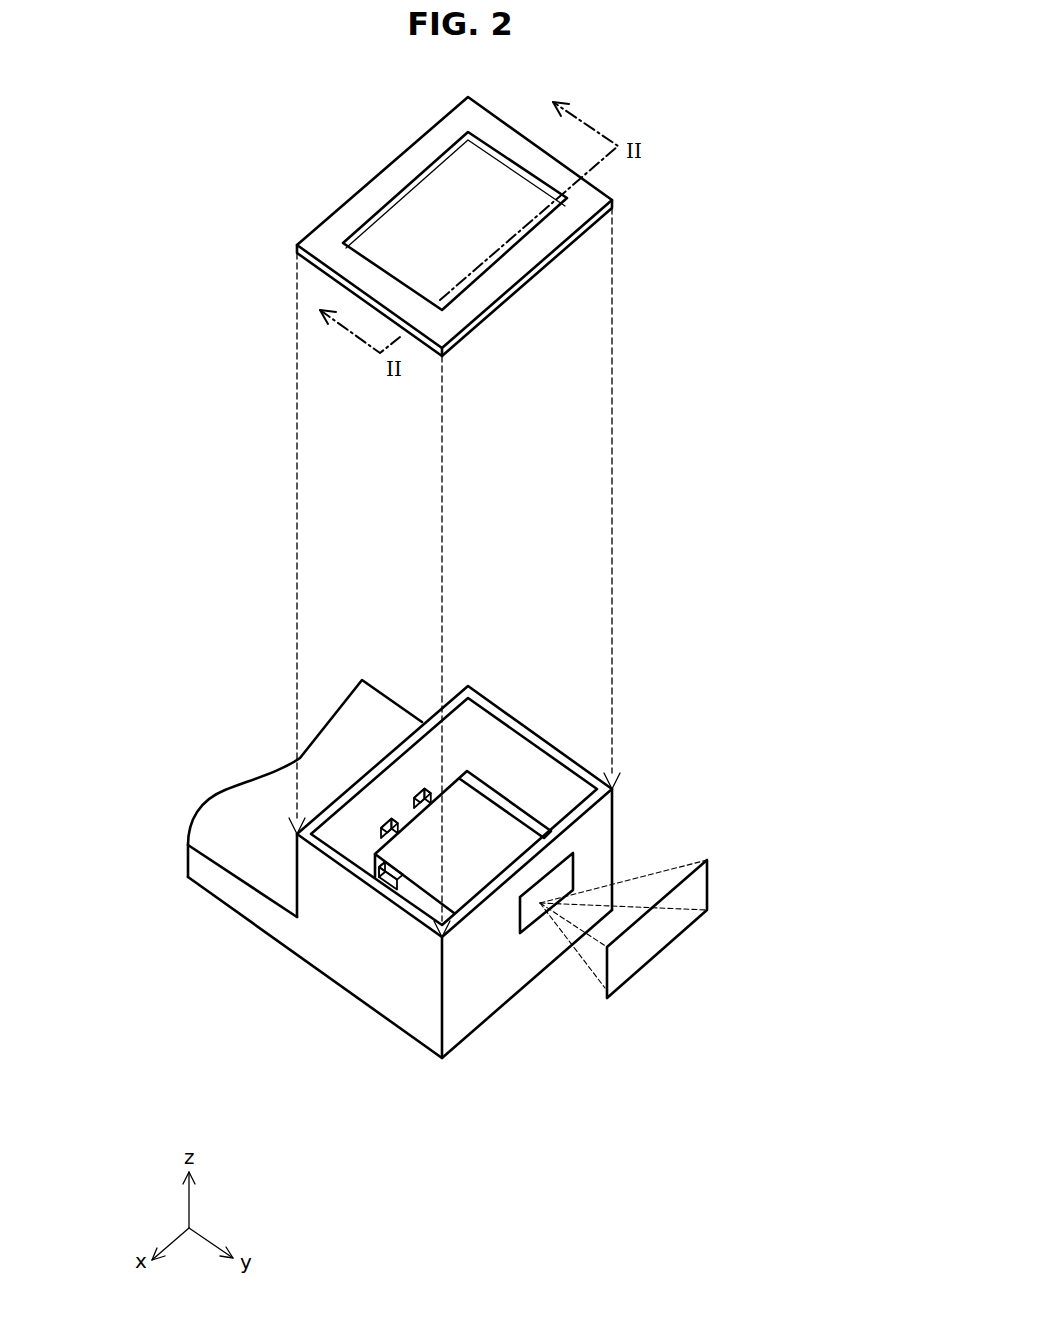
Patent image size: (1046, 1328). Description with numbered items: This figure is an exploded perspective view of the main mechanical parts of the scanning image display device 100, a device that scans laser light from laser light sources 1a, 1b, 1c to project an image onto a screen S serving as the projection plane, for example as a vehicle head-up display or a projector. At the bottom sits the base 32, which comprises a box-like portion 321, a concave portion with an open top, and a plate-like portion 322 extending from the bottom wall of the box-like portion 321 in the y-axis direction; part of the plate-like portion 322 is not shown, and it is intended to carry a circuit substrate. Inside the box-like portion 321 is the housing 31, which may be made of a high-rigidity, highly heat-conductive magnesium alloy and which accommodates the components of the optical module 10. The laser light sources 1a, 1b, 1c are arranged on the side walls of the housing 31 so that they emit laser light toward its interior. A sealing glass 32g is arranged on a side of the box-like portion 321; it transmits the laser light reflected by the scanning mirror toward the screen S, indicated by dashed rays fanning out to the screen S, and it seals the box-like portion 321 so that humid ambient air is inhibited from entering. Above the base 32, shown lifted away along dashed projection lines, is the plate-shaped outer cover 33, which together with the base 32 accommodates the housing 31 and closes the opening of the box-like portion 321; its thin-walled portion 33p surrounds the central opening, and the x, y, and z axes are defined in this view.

The scanning image display device 100 is at (667, 413).
The outer cover 33 is at (395, 180).
The thin-walled portion 33p is at (462, 185).
The base 32 is at (462, 1000).
The box-like portion 321 is at (307, 1052).
The plate-like portion 322 is at (178, 955).
The sealing glass 32g is at (560, 873).
The screen S is at (650, 932).
The housing 31 is at (460, 818).
The optical module 10 is at (497, 850).
The laser light source 1a is at (432, 792).
The laser light source 1b is at (385, 878).
The laser light source 1c is at (387, 823).